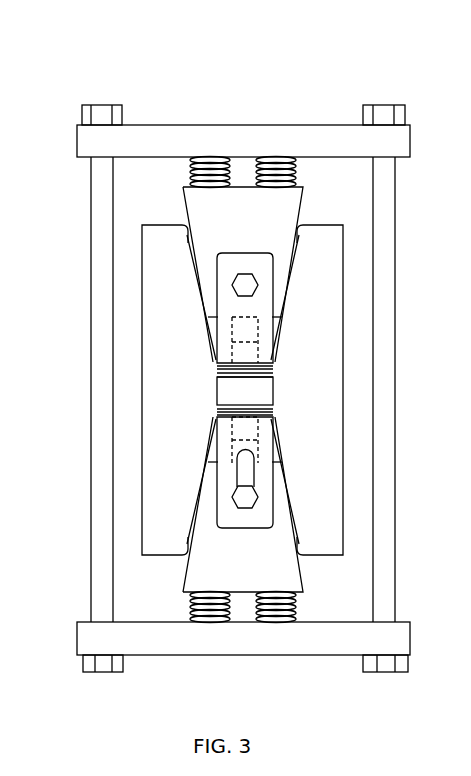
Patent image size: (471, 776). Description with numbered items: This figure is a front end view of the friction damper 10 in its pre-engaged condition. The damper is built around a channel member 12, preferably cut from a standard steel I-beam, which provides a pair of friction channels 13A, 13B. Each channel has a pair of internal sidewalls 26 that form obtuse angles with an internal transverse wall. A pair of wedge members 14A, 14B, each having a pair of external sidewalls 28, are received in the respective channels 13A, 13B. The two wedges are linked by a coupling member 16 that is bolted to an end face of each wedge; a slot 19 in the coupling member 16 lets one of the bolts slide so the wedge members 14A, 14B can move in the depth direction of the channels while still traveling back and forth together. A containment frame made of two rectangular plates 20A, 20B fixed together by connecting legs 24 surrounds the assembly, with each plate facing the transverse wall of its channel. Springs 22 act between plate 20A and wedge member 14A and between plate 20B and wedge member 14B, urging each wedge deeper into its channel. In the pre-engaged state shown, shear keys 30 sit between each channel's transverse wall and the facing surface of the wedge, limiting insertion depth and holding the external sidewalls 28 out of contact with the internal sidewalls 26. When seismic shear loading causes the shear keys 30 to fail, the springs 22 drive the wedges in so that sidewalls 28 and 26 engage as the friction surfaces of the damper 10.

The friction damper 10 is at (196, 74).
The channel member 12 is at (343, 325).
The friction channel 13A is at (214, 347).
The friction channel 13B is at (214, 438).
The wedge member 14A is at (250, 215).
The wedge member 14B is at (250, 585).
The coupling member 16 is at (217, 385).
The slot 19 is at (253, 459).
The rectangular plate 20A is at (273, 125).
The rectangular plate 20B is at (277, 655).
The springs 22 is at (188, 170).
The connecting legs 24 is at (91, 212).
The internal sidewalls 26 is at (295, 252).
The external sidewalls 28 is at (190, 244).
The shear keys 30 is at (258, 347).